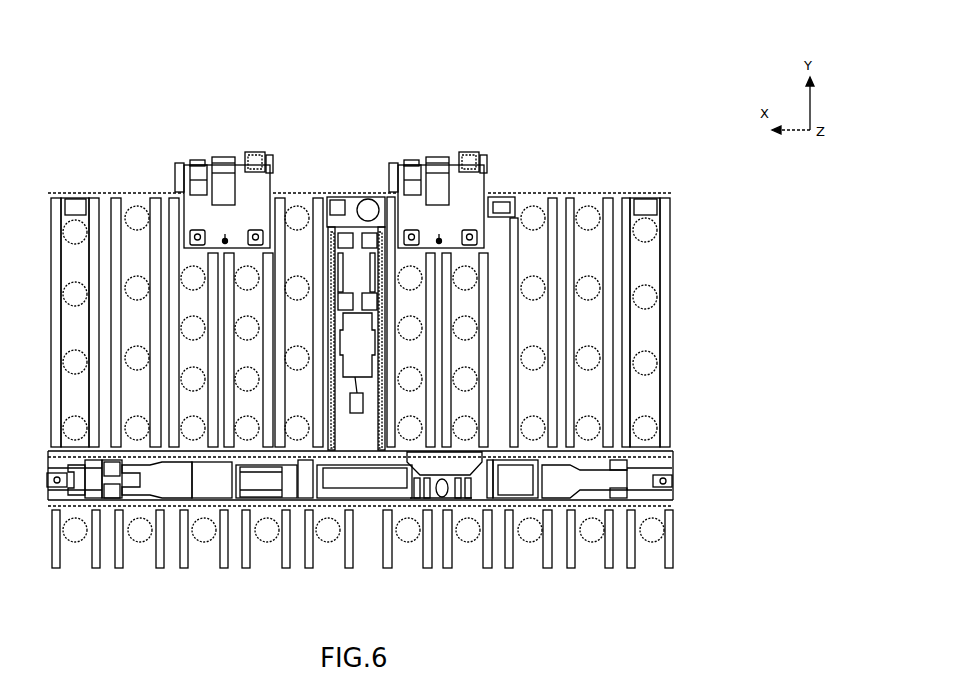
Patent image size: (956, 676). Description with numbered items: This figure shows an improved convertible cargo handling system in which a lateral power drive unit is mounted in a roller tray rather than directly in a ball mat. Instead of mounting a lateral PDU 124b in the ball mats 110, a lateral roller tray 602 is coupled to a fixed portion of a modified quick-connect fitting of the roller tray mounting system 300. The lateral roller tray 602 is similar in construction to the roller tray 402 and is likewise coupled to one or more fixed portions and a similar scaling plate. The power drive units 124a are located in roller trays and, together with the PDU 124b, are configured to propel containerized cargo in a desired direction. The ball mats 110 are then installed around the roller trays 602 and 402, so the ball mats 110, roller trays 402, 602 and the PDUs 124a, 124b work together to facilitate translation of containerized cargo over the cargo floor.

The roller tray mounting system 300 is at (497, 101).
The ball mats 110 is at (141, 238).
The power drive unit 124a is at (142, 483).
The power drive unit 124b is at (350, 325).
The roller tray 402 is at (328, 503).
The lateral roller tray 602 is at (330, 258).